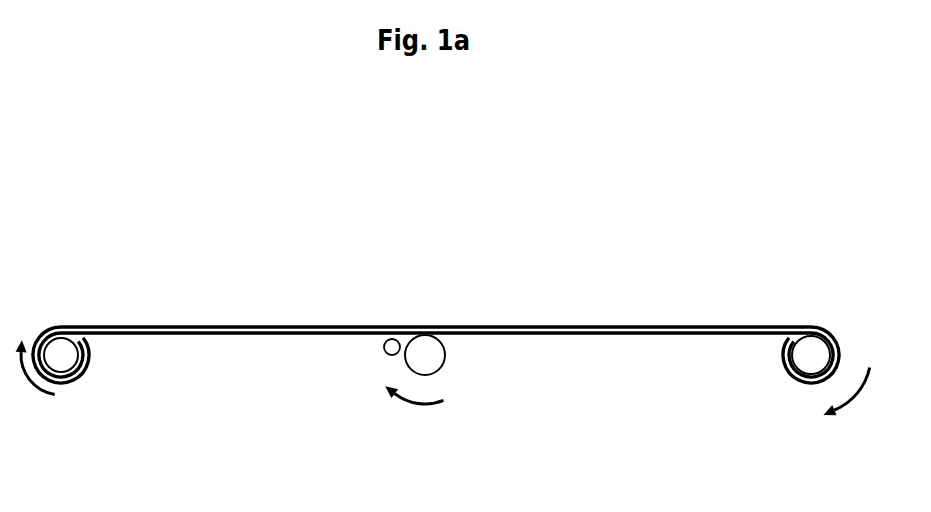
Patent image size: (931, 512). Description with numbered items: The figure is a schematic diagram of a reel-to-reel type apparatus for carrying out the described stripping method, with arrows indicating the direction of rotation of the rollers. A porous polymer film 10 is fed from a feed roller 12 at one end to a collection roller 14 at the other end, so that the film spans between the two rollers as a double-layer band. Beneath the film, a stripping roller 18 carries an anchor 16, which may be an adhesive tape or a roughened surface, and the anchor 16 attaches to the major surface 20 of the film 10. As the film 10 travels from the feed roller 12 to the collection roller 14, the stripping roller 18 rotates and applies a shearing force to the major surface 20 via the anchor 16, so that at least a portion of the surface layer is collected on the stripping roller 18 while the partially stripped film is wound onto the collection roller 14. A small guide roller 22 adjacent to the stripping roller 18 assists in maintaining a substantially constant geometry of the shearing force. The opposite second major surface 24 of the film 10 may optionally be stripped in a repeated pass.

The porous polymer film 10 is at (443, 353).
The feed roller 12 is at (60, 356).
The collection roller 14 is at (811, 355).
The anchor 16 is at (425, 335).
The stripping roller 18 is at (425, 355).
The major surface 20 is at (180, 337).
The guide roller 22 is at (392, 347).
The second major surface 24 is at (162, 325).